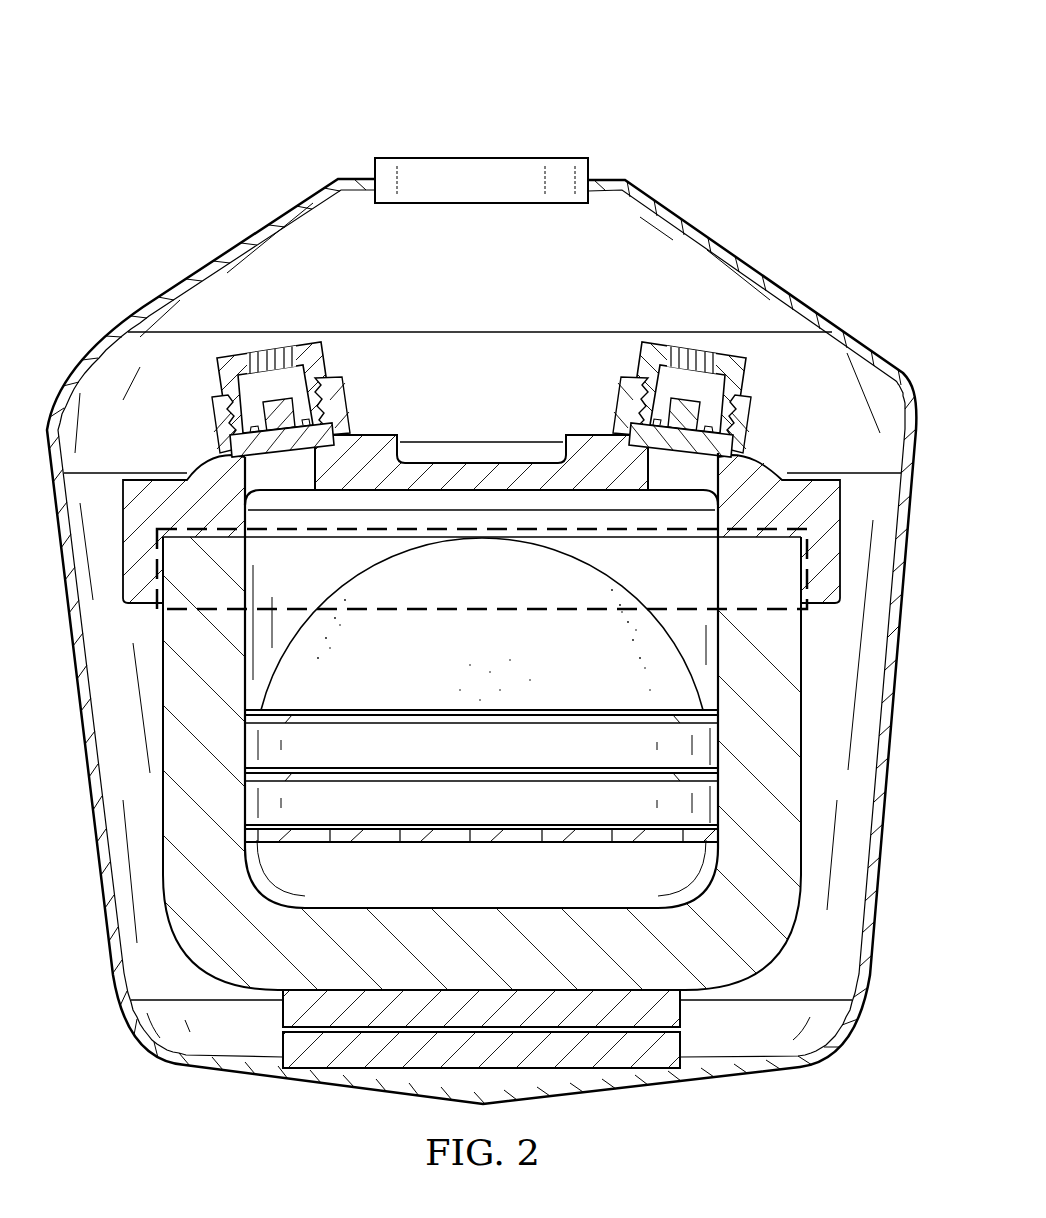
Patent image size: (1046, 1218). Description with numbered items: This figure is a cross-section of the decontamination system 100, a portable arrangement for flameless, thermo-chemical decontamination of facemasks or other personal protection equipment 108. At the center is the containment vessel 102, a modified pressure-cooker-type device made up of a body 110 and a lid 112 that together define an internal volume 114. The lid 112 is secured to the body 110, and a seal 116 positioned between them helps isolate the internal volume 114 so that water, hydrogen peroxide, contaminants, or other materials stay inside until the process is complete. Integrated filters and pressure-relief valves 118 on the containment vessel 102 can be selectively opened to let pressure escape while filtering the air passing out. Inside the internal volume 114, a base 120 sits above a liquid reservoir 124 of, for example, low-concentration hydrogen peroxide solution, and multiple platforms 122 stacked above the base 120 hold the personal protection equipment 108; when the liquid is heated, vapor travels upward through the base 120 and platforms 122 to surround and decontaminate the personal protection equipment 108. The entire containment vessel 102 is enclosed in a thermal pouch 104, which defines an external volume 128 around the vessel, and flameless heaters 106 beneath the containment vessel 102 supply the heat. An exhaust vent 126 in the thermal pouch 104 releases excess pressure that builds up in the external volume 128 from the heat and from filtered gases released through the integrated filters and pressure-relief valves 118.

The decontamination system 100 is at (232, 56).
The containment vessel 102 is at (786, 431).
The thermal pouch 104 is at (207, 265).
The flameless heater 106 is at (682, 1010).
The personal protection equipment 108 is at (347, 592).
The body 110 is at (802, 738).
The lid 112 is at (822, 478).
The internal volume 114 is at (650, 593).
The seal 116 is at (412, 612).
The integrated filters and pressure-relief valves 118 is at (186, 408).
The base 120 is at (585, 843).
The platforms 122 is at (327, 743).
The liquid reservoir 124 is at (320, 870).
The exhaust vent 126 is at (480, 157).
The external volume 128 is at (685, 260).